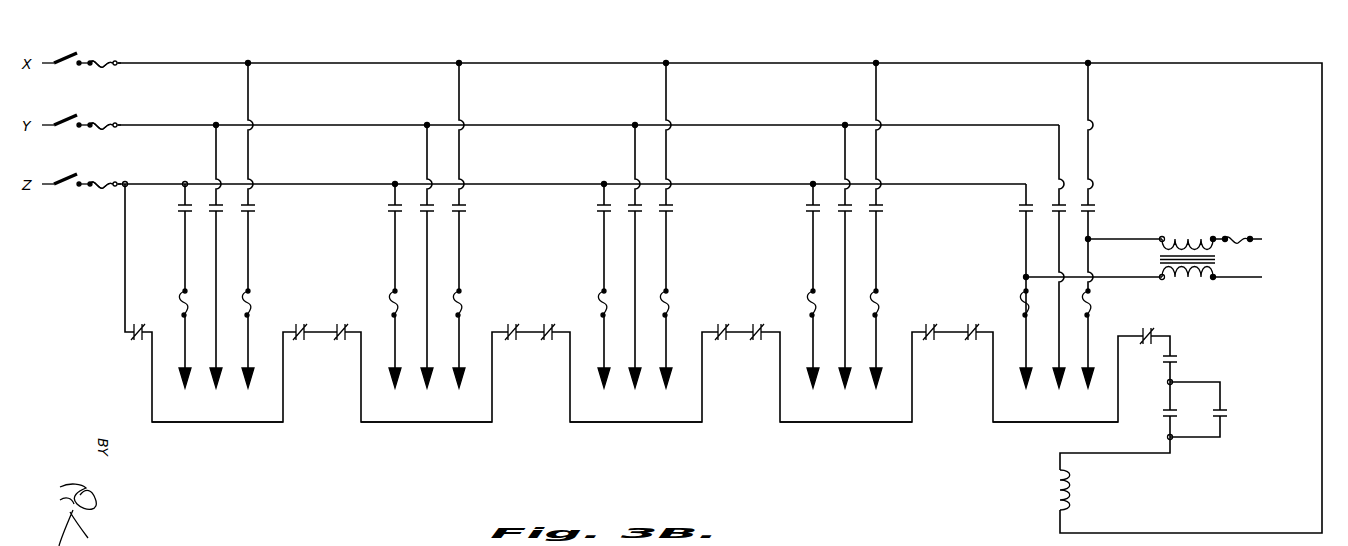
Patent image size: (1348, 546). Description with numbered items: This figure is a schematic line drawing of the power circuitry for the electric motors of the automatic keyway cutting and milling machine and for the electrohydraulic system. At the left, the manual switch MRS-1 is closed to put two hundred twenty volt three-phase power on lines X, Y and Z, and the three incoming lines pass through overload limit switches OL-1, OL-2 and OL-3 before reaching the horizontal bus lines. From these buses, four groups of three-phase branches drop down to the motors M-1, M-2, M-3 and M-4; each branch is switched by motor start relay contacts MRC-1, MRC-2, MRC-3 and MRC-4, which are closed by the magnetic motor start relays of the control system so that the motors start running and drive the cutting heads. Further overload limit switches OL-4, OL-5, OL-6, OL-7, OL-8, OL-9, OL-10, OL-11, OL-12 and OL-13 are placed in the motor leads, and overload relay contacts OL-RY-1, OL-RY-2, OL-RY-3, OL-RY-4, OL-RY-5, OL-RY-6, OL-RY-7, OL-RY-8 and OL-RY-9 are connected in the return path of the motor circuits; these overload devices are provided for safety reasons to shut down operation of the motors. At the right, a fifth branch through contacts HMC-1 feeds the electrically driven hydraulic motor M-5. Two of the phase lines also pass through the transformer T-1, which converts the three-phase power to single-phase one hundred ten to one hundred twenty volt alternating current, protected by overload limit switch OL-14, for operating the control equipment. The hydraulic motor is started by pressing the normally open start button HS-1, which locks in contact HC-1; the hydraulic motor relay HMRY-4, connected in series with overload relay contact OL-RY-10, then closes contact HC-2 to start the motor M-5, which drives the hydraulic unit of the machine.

The manual switch MRS-1 is at (78, 111).
The overload limit switch OL-1 is at (113, 53).
The overload limit switch OL-2 is at (113, 115).
The overload limit switch OL-3 is at (114, 175).
The overload limit switch OL-4 is at (160, 303).
The overload limit switch OL-5 is at (265, 303).
The overload limit switch OL-6 is at (370, 303).
The overload limit switch OL-7 is at (476, 303).
The overload limit switch OL-8 is at (578, 303).
The overload limit switch OL-9 is at (682, 303).
The overload limit switch OL-10 is at (785, 303).
The overload limit switch OL-11 is at (897, 303).
The overload limit switch OL-12 is at (998, 303).
The overload limit switch OL-13 is at (1111, 303).
The overload limit switch OL-14 is at (1252, 224).
The motor start relay contact MRC-1 is at (244, 211).
The motor start relay contact MRC-2 is at (455, 211).
The motor start relay contact MRC-3 is at (663, 211).
The motor start relay contact MRC-4 is at (871, 211).
The hydraulic motor contact HMC-1 is at (1085, 212).
The overload relay OL-RY-1 is at (134, 343).
The overload relay OL-RY-2 is at (296, 350).
The overload relay OL-RY-3 is at (338, 322).
The overload relay OL-RY-4 is at (506, 350).
The overload relay OL-RY-5 is at (545, 323).
The overload relay OL-RY-6 is at (716, 350).
The overload relay OL-RY-7 is at (753, 323).
The overload relay OL-RY-8 is at (924, 350).
The overload relay OL-RY-9 is at (968, 323).
The overload relay OL-RY-10 is at (1142, 330).
The electric motor M-1 is at (217, 435).
The electric motor M-2 is at (426, 435).
The electric motor M-3 is at (636, 435).
The electric motor M-4 is at (846, 435).
The hydraulic motor M-5 is at (1055, 435).
The transformer T-1 is at (1151, 250).
The contact HC-1 is at (1149, 415).
The contact HC-2 is at (1189, 362).
The start button HS-1 is at (1217, 410).
The hydraulic motor relay HMRY-4 is at (1097, 490).